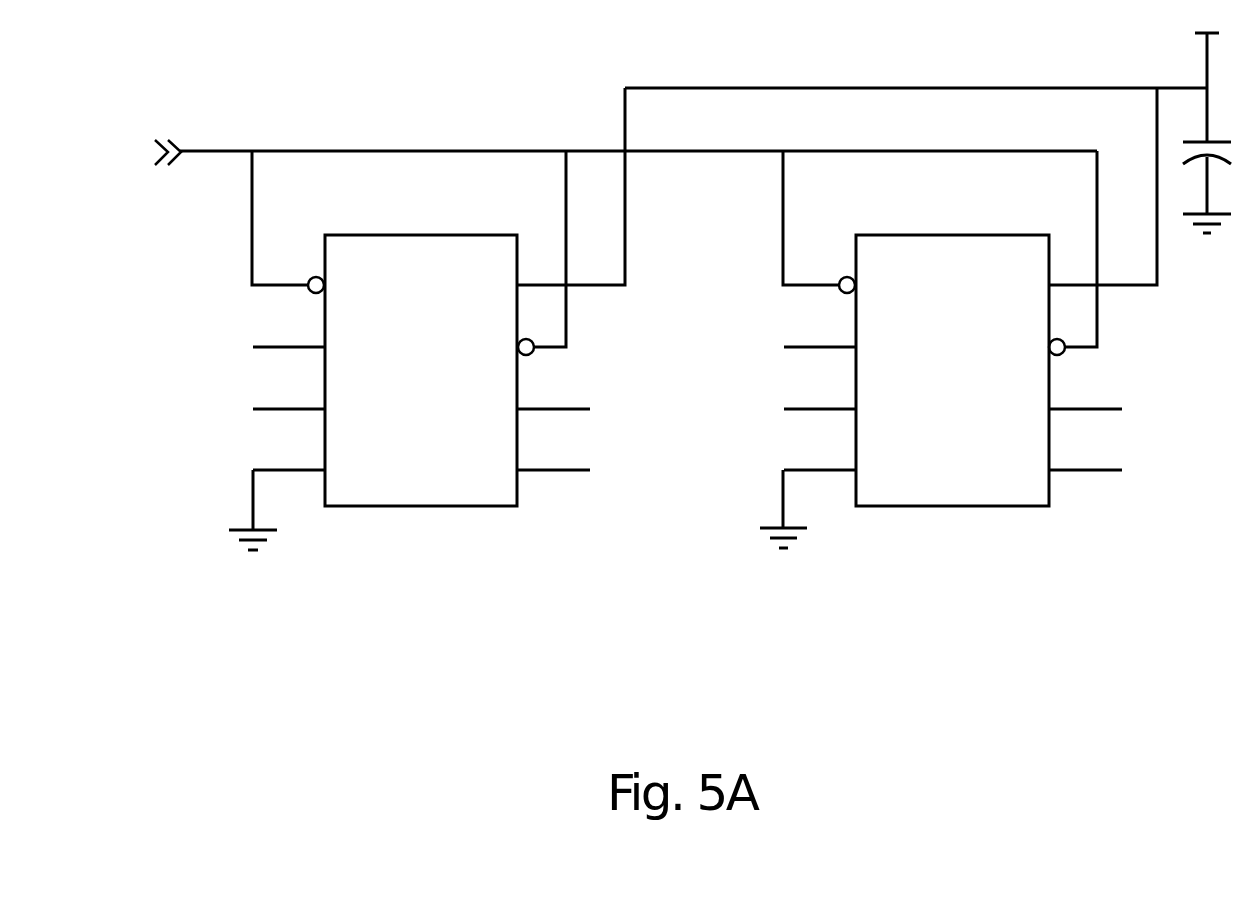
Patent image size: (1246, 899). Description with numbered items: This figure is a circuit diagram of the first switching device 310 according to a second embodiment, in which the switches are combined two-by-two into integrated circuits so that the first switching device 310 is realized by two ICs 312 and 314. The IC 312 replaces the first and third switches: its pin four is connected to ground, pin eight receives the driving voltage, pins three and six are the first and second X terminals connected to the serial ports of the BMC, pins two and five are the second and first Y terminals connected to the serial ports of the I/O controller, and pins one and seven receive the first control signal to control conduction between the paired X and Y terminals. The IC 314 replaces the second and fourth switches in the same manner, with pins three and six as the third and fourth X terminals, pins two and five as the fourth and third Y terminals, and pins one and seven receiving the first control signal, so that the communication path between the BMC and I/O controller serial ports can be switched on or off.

The first switching device 310 is at (1108, 701).
The IC 312 is at (425, 507).
The IC 314 is at (942, 507).